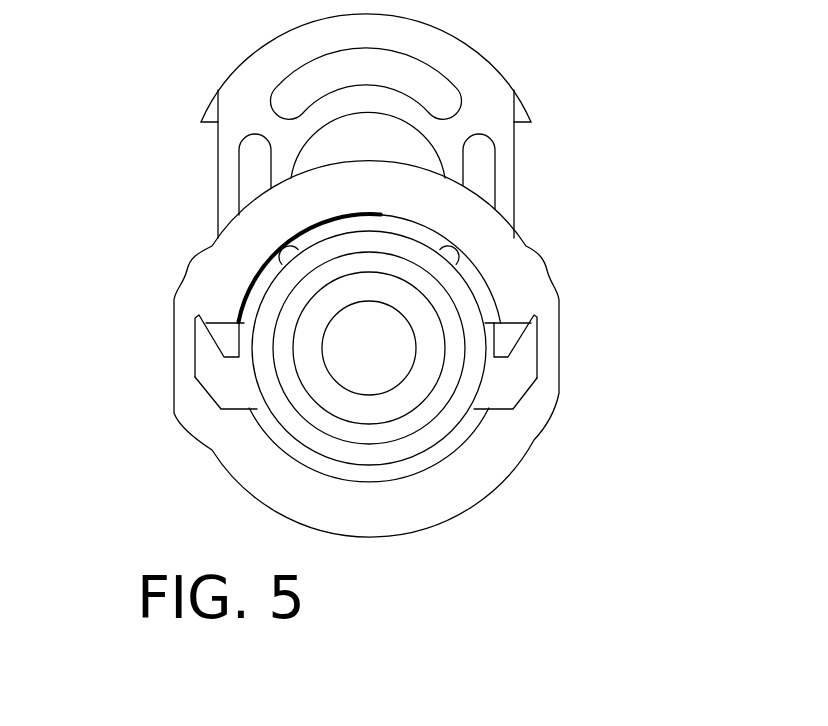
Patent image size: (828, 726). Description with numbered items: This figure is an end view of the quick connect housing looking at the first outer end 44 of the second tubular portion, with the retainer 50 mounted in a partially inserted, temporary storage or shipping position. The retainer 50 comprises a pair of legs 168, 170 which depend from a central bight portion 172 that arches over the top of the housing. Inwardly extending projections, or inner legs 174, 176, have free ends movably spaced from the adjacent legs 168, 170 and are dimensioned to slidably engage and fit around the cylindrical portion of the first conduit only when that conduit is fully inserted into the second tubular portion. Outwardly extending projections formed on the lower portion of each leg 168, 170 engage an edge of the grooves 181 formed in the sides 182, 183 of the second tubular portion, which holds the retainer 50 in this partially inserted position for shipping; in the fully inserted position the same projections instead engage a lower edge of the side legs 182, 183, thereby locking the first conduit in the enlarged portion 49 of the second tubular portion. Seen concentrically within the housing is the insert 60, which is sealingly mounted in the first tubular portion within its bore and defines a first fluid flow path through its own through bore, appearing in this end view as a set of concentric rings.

The first outer end 44 is at (228, 260).
The enlarged portion 49 is at (174, 347).
The retainer 50 is at (505, 58).
The insert 60 is at (534, 245).
The leg 168 is at (227, 170).
The leg 170 is at (508, 176).
The central bight portion 172 is at (326, 32).
The inner leg 174 is at (288, 152).
The inner leg 176 is at (450, 157).
The groove 181 is at (203, 404).
The side 182 is at (183, 367).
The side 183 is at (552, 358).